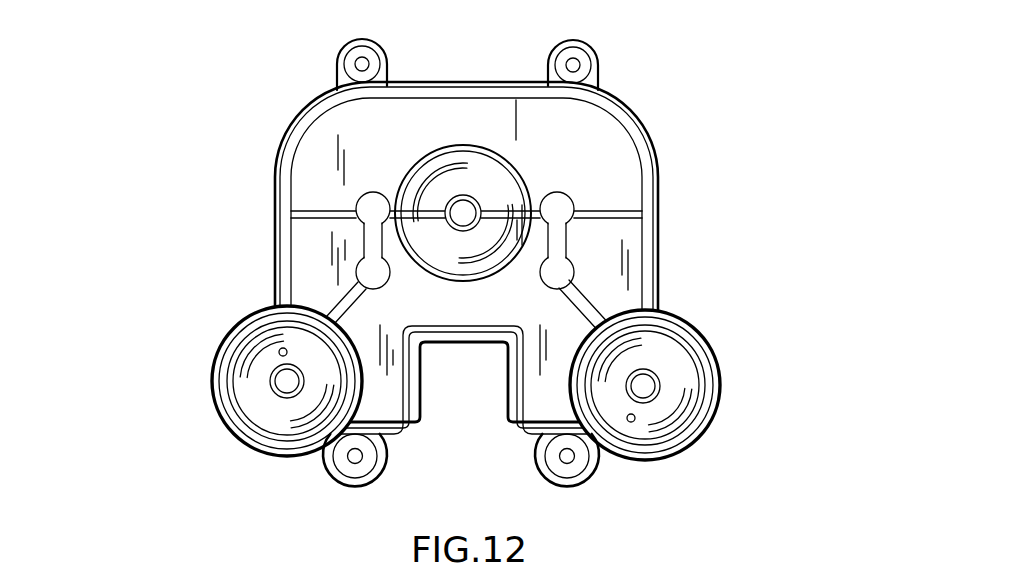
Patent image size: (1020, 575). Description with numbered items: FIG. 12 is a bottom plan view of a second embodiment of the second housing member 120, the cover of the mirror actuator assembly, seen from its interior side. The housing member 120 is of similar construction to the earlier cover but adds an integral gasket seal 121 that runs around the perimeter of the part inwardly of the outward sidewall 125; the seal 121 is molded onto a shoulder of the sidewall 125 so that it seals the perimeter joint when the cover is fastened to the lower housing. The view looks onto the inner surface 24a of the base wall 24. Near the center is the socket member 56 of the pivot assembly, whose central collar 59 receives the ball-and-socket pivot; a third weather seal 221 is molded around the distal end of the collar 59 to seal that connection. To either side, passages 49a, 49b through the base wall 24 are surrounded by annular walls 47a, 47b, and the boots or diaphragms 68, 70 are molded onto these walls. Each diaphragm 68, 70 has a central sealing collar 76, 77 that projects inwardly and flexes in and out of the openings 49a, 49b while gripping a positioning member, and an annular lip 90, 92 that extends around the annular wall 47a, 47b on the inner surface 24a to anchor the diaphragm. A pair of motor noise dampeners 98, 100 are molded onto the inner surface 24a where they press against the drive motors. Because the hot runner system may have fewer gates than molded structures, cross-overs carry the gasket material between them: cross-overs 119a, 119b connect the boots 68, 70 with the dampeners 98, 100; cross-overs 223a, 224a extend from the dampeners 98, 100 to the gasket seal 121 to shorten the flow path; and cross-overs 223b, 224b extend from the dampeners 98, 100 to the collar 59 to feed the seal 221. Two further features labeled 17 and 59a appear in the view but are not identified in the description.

The mounting lug 17 is at (345, 46).
The base wall 24 is at (467, 117).
The inner surface of base wall 24a is at (600, 165).
The socket member 56 is at (432, 132).
The central collar 59 is at (467, 195).
The central opening 59a is at (467, 256).
The boot 68 is at (655, 363).
The boot 70 is at (266, 362).
The central sealing collar 76 is at (262, 412).
The central sealing collar 77 is at (672, 372).
The annular lip 90 is at (233, 397).
The annular lip 92 is at (694, 408).
The motor noise dampener 98 is at (376, 183).
The motor noise dampener 100 is at (567, 250).
The cross-over 119a is at (357, 455).
The cross-over 119b is at (523, 433).
The second housing member 120 is at (722, 148).
The integral gasket seal 121 is at (633, 137).
The outward sidewall 125 is at (659, 278).
The third weather seal 221 is at (481, 194).
The cross-over 223a is at (327, 217).
The cross-over 223b is at (427, 224).
The cross-over 224a is at (596, 212).
The cross-over 224b is at (523, 433).
The annular wall 47a is at (238, 378).
The annular wall 47b is at (697, 440).
The passage 49a is at (283, 348).
The passage 49b is at (632, 422).